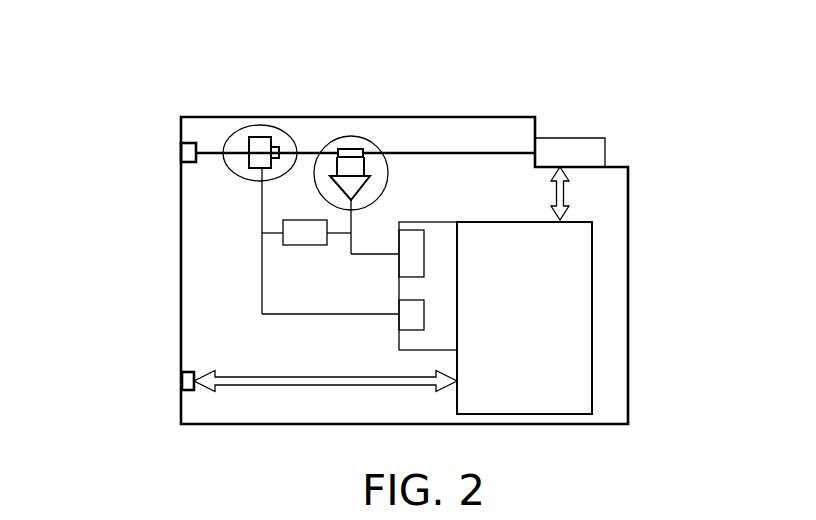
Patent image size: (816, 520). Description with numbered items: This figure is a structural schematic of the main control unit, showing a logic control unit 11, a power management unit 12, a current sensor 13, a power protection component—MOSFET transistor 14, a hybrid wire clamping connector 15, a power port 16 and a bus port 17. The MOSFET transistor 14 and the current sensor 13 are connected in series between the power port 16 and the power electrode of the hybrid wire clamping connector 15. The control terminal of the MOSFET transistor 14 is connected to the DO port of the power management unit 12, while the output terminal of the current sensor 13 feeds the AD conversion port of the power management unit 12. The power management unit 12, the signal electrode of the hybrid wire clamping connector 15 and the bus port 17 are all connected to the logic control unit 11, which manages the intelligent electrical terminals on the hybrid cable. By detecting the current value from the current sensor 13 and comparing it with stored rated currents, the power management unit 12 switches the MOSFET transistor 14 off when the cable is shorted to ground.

The logic control unit 11 is at (563, 263).
The power management unit 12 is at (443, 298).
The current sensor 13 is at (357, 145).
The power protection component—MOSFET transistor 14 is at (278, 128).
The hybrid wire clamping connector 15 is at (563, 147).
The power port 16 is at (181, 155).
The bus port 17 is at (182, 378).